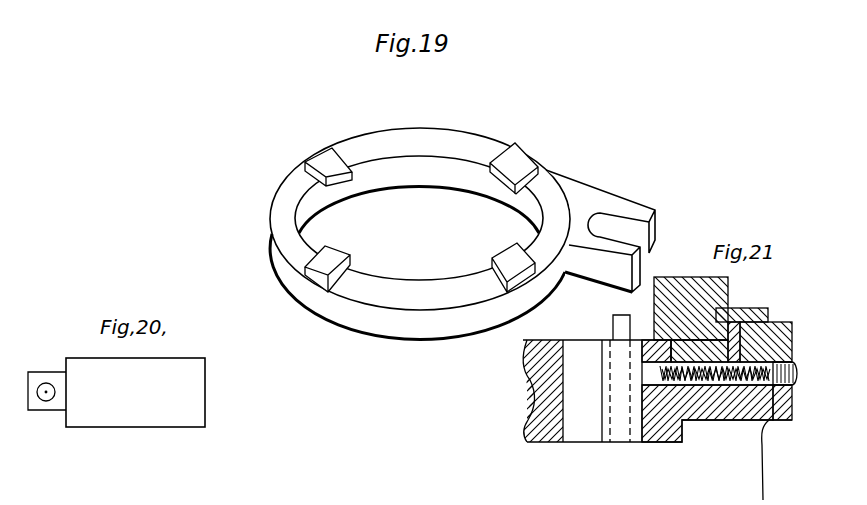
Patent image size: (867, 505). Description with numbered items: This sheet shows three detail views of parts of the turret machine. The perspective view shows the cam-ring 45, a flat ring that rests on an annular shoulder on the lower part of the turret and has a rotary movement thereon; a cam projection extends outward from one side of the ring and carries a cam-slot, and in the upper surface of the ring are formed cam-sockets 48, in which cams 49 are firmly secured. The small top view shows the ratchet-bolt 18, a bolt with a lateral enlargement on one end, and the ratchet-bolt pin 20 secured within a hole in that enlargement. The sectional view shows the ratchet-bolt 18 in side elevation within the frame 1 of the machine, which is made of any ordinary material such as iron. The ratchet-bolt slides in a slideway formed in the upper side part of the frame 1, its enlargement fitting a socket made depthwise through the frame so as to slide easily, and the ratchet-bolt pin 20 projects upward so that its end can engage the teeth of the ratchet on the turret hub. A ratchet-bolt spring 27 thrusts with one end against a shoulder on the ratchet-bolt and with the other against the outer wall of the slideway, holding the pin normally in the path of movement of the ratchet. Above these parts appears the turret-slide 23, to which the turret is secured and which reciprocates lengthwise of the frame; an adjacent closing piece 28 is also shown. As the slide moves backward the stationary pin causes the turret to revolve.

In FIG. 21, the frame 1 is at (645, 340).
In FIG. 20, the ratchet-bolt 18 is at (135, 405).
In FIG. 21, the ratchet-bolt 18 is at (603, 443).
In FIG. 20, the ratchet-bolt pin 20 is at (46, 401).
In FIG. 21, the ratchet-bolt pin 20 is at (606, 377).
In FIG. 21, the turret-slide 23 is at (738, 284).
In FIG. 21, the ratchet-bolt spring 27 is at (777, 352).
In FIG. 21, the end plate 28 is at (792, 408).
In FIG. 19, the cam-ring 45 is at (443, 234).
In FIG. 19, the cam-sockets 48 is at (305, 272).
In FIG. 19, the cams 49 is at (521, 161).